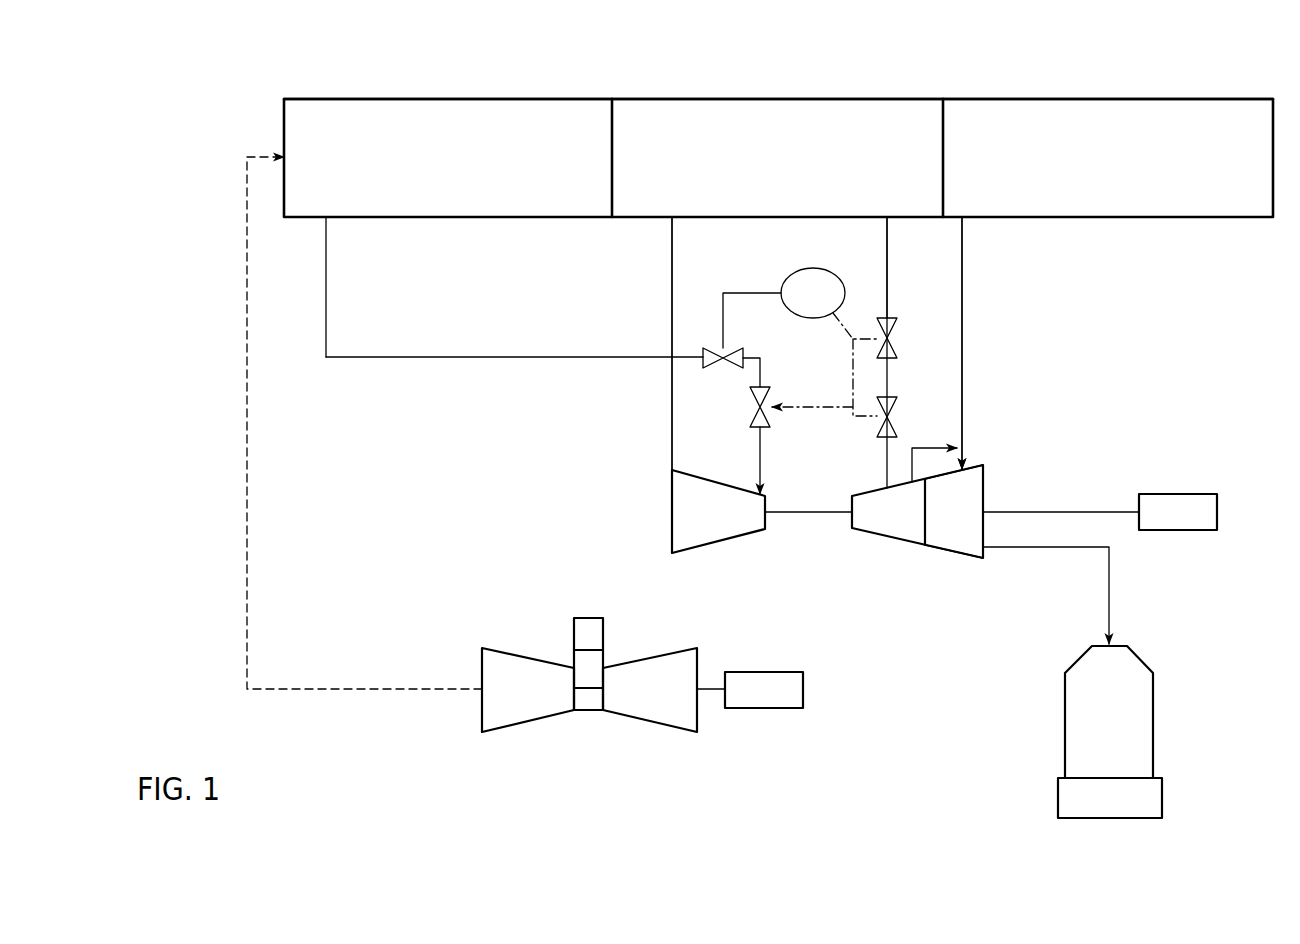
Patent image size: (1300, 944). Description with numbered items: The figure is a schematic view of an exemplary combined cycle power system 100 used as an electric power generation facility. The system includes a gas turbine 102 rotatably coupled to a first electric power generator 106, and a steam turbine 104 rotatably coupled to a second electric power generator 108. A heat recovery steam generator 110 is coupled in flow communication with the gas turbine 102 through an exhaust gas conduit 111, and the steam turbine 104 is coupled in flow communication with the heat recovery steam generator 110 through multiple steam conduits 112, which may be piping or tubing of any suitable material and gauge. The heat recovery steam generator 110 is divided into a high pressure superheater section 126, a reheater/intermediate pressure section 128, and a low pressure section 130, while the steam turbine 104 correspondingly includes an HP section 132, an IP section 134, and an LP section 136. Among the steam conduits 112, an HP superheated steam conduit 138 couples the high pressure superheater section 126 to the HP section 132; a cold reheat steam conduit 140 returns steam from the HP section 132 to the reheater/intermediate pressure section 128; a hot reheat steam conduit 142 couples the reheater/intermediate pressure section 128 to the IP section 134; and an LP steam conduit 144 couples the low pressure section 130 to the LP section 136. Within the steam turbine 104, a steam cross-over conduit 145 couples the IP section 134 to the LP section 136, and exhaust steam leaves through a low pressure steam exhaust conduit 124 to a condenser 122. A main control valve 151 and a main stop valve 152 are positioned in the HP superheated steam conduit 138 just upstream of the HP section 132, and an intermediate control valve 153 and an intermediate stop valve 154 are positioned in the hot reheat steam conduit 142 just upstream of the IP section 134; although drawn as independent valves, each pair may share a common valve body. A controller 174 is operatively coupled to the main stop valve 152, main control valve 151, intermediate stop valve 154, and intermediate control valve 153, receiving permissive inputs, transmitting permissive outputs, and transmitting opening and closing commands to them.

The combined cycle power system 100 is at (262, 68).
The gas turbine 102 is at (580, 737).
The steam turbine 104 is at (908, 537).
The first electric power generator 106 is at (764, 672).
The second electric power generator 108 is at (1178, 530).
The heat recovery steam generator 110 is at (425, 84).
The exhaust gas conduit 111 is at (297, 689).
The steam conduits 112 is at (336, 229).
The condenser 122 is at (1093, 734).
The low pressure steam exhaust conduit 124 is at (1109, 590).
The high pressure superheater section 126 is at (431, 145).
The reheater/intermediate pressure section 128 is at (760, 145).
The low pressure section 130 is at (1090, 145).
The HP section 132 is at (696, 524).
The IP section 134 is at (872, 524).
The LP section 136 is at (937, 524).
The HP superheated steam conduit 138 is at (365, 357).
The cold reheat steam conduit 140 is at (672, 297).
The hot reheat steam conduit 142 is at (887, 248).
The LP steam conduit 144 is at (962, 290).
The steam cross-over conduit 145 is at (930, 447).
The main control valve 151 is at (712, 348).
The main stop valve 152 is at (750, 412).
The intermediate control valve 153 is at (897, 330).
The intermediate stop valve 154 is at (897, 400).
The controller 174 is at (797, 305).